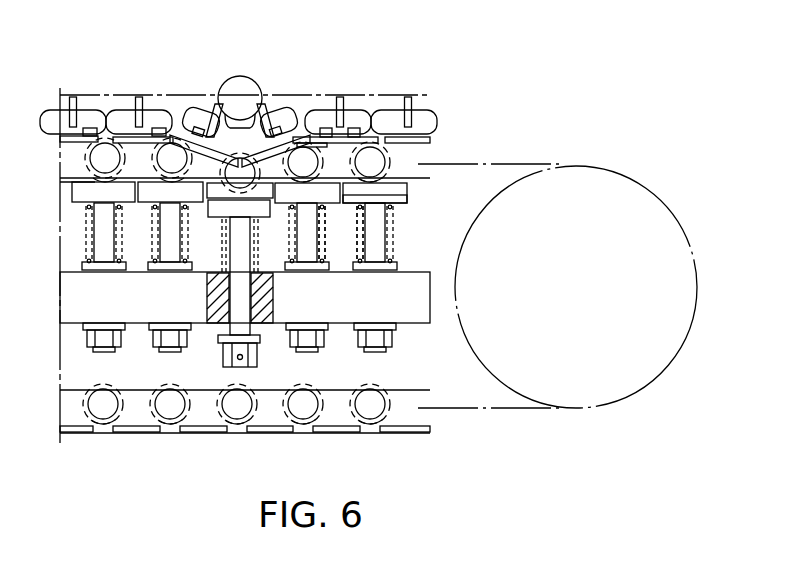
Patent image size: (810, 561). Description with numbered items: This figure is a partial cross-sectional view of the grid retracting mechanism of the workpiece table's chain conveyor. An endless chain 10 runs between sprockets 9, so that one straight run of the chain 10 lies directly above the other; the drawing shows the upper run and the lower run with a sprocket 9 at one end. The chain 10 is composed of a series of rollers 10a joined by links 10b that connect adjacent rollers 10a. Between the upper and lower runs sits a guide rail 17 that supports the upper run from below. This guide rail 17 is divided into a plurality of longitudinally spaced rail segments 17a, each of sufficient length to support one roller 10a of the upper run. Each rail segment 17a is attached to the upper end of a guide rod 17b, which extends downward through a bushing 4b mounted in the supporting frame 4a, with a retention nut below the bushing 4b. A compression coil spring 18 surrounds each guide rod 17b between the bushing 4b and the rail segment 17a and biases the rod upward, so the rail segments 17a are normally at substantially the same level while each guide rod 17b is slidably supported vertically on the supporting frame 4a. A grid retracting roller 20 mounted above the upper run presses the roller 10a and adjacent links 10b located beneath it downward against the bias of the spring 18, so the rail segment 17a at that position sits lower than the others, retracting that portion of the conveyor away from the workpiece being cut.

The supporting frame 4a is at (344, 320).
The bushing 4b is at (268, 284).
The sprocket 9 is at (613, 385).
The endless chain 10 is at (296, 239).
The roller 10a is at (332, 104).
The link 10b is at (342, 155).
The guide rail 17 is at (408, 190).
The rail segment 17a is at (393, 196).
The guide rod 17b is at (372, 252).
The compression coil spring 18 is at (356, 253).
The grid retracting roller 20 is at (238, 86).